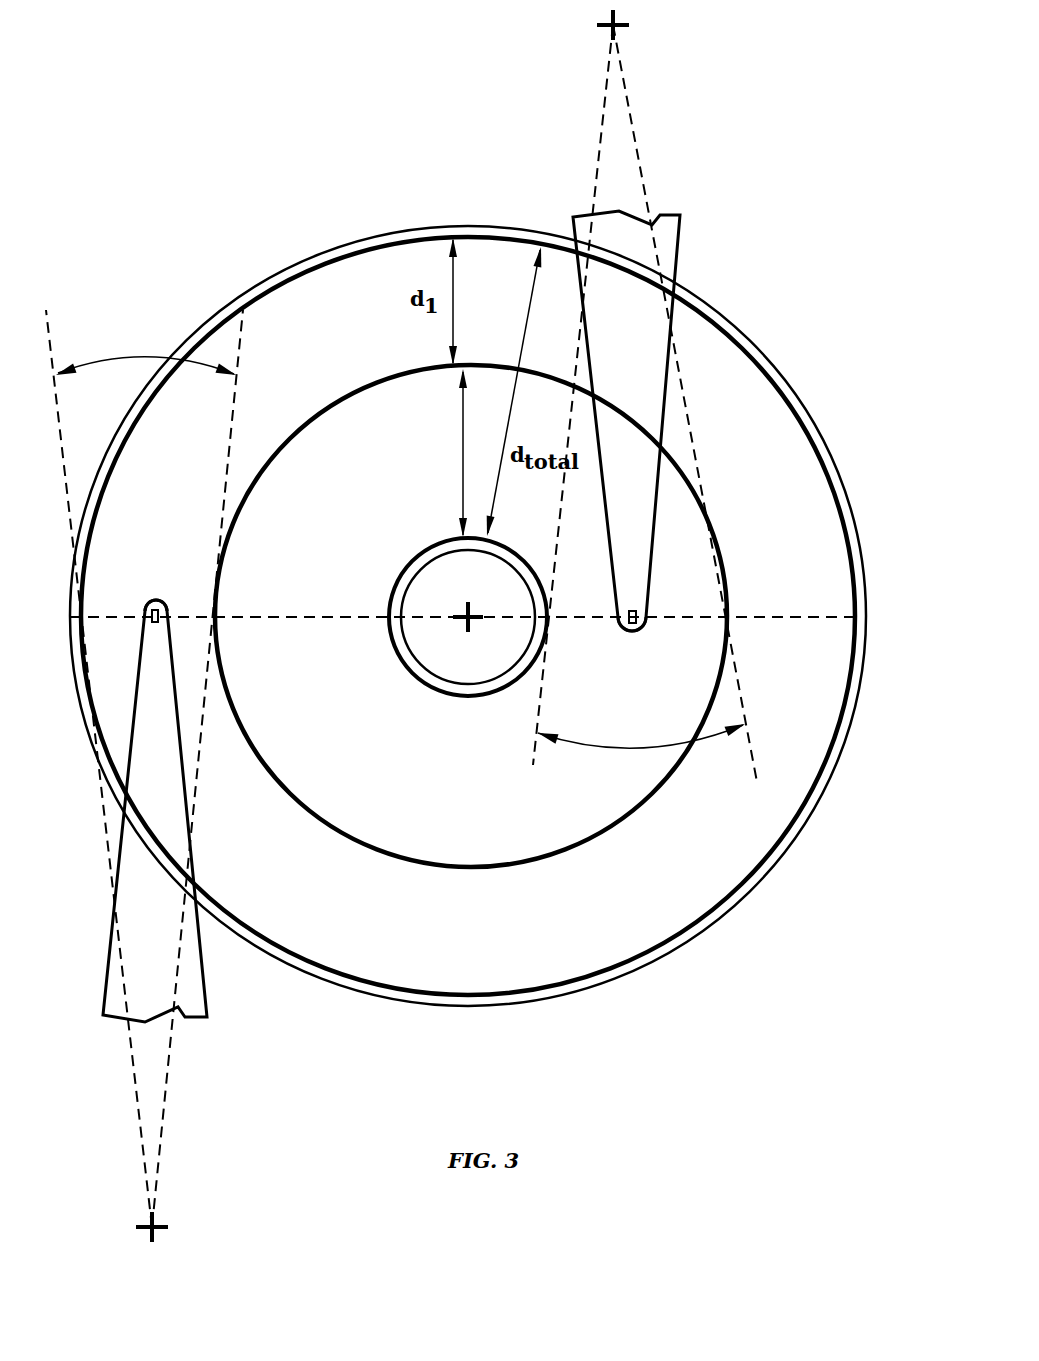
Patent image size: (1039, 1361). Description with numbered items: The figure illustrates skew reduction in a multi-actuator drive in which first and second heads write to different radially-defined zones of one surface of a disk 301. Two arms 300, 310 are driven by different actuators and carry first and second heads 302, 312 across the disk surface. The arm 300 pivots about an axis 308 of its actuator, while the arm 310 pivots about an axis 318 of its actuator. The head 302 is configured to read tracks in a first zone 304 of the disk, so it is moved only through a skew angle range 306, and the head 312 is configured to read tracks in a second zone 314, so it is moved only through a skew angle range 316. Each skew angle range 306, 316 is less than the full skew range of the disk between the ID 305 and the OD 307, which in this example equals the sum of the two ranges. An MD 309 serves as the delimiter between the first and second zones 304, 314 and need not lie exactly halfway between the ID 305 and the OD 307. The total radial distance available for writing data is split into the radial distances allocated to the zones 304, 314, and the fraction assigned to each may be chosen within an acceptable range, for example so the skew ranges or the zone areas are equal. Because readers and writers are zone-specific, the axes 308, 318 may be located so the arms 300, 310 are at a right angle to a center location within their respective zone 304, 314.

The arm 300 is at (107, 983).
The disk 301 is at (472, 1013).
The first head 302 is at (155, 600).
The first zone 304 is at (341, 945).
The ID 305 is at (462, 697).
The skew angle range 306 is at (116, 357).
The OD 307 is at (402, 995).
The axis 308 is at (138, 1228).
The MD 309 is at (512, 870).
The arm 310 is at (682, 237).
The second head 312 is at (632, 632).
The second zone 314 is at (412, 832).
The skew angle range 316 is at (582, 750).
The axis 318 is at (597, 25).